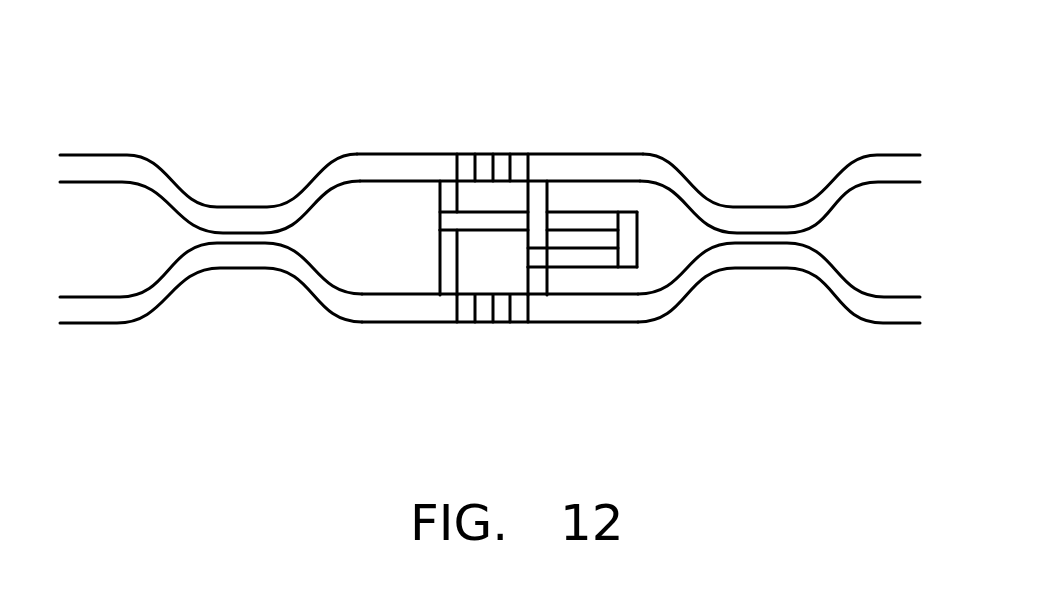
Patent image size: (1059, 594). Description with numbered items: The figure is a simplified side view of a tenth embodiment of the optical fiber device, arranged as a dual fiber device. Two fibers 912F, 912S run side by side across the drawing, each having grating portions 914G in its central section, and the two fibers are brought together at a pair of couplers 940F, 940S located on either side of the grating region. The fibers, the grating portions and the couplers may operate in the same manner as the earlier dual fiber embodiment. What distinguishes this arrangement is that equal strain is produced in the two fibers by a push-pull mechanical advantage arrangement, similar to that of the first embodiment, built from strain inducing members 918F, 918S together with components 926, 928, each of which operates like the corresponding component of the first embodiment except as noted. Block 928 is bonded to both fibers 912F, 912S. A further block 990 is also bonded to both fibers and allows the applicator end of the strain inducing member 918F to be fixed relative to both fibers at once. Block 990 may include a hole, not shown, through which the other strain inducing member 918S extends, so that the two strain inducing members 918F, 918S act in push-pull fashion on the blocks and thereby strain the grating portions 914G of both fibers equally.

The coupler 940F is at (247, 216).
The coupler 940S is at (763, 212).
The fiber 912F is at (572, 153).
The fiber 912S is at (633, 322).
The grating portions 914G is at (493, 154).
The strain inducing member 918S is at (467, 222).
The strain inducing member 918F is at (592, 268).
The component 926 is at (632, 227).
The block 928 is at (443, 255).
The block 990 is at (533, 277).